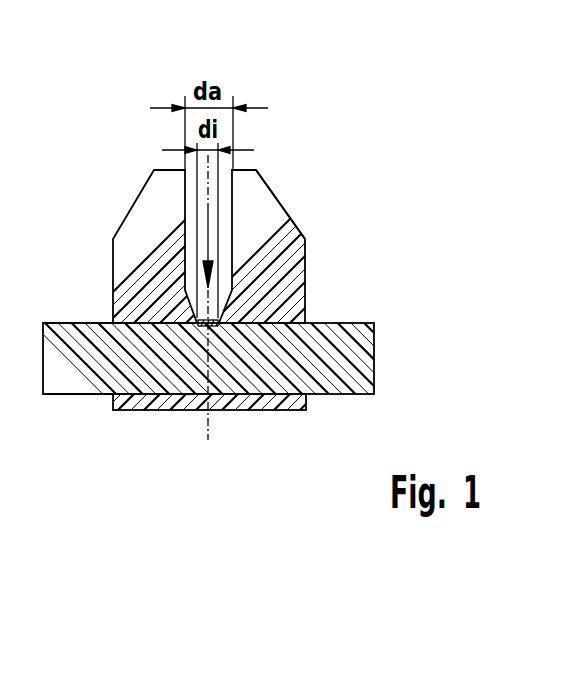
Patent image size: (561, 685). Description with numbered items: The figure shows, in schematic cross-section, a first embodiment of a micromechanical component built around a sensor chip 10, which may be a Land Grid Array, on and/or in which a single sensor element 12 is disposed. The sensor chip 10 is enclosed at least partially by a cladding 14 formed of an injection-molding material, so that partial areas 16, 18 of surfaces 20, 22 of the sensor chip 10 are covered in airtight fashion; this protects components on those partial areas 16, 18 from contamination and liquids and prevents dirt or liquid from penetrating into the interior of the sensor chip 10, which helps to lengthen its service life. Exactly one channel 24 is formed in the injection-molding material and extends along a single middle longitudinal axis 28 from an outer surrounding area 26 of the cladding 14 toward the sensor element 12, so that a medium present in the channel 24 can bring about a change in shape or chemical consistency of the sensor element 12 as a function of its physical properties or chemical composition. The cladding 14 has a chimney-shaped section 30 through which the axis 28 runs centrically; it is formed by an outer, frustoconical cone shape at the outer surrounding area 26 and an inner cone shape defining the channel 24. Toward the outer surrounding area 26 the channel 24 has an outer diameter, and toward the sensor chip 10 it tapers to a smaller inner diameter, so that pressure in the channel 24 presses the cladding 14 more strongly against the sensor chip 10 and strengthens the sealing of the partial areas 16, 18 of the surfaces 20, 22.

The sensor chip 10 is at (343, 382).
The sensor element 12 is at (215, 320).
The cladding 14 is at (147, 218).
The partial area 16 is at (289, 171).
The partial area 18 is at (305, 432).
The surface 20 is at (87, 321).
The surface 22 is at (88, 398).
The channel 24 is at (212, 228).
The outer surrounding area 26 is at (308, 151).
The middle longitudinal axis 28 is at (209, 413).
The chimney-shaped section 30 is at (304, 191).